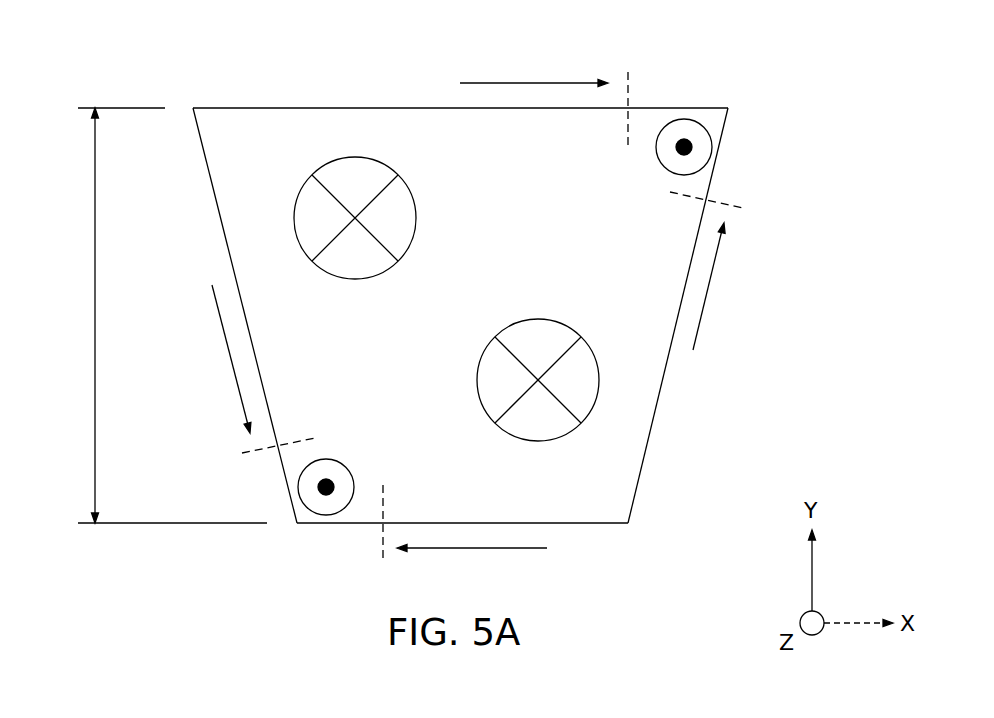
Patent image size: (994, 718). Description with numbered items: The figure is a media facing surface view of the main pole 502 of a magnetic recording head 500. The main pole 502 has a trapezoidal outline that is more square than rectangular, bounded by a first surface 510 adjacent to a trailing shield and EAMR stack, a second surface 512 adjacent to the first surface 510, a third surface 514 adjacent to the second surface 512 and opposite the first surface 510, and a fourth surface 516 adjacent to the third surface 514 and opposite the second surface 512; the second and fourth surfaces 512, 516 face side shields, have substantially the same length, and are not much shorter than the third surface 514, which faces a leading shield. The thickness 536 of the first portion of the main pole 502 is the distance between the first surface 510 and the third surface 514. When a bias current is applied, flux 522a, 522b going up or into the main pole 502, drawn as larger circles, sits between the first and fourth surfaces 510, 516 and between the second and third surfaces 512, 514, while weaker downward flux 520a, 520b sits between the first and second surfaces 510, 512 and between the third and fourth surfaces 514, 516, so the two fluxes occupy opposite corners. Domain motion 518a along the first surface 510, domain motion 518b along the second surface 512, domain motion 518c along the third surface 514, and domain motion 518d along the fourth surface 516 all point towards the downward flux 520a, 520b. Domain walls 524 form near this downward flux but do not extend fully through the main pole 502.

The magnetic recording head 500 is at (208, 68).
The main pole 502 is at (509, 150).
The first surface 510 is at (355, 108).
The second surface 512 is at (654, 417).
The third surface 514 is at (593, 523).
The fourth surface 516 is at (215, 197).
The domain motion 518a is at (542, 83).
The domain motion 518b is at (711, 290).
The domain motion 518c is at (457, 548).
The domain motion 518d is at (225, 337).
The flux 520a is at (660, 162).
The flux 520b is at (345, 463).
The flux 522a is at (370, 278).
The flux 522b is at (570, 435).
The domain walls 524 is at (628, 120).
The thickness 536 is at (95, 330).